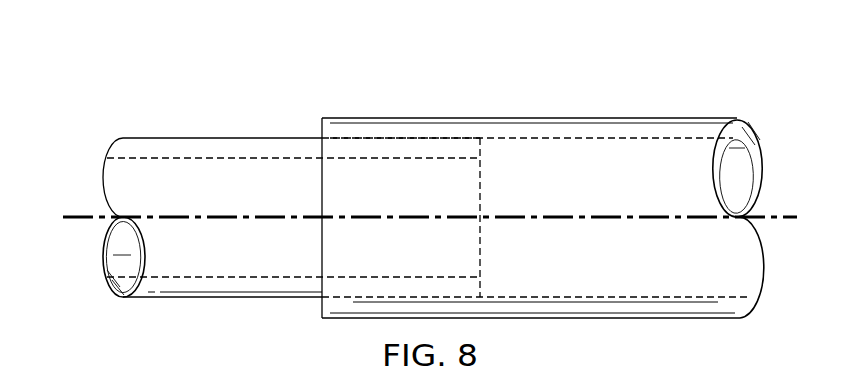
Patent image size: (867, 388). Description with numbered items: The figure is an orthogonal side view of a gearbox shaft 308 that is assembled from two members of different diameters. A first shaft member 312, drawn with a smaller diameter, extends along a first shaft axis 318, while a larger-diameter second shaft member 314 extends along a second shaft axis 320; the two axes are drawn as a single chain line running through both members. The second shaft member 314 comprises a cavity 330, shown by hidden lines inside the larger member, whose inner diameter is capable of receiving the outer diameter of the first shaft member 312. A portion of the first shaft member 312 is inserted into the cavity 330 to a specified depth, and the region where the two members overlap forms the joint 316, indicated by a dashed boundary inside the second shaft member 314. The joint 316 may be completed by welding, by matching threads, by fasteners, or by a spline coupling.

The gearbox shaft 308 is at (292, 77).
The first shaft member 312 is at (173, 137).
The second shaft member 314 is at (649, 118).
The joint 316 is at (482, 245).
The first shaft axis 318 is at (83, 216).
The second shaft axis 320 is at (777, 215).
The cavity 330 is at (443, 138).